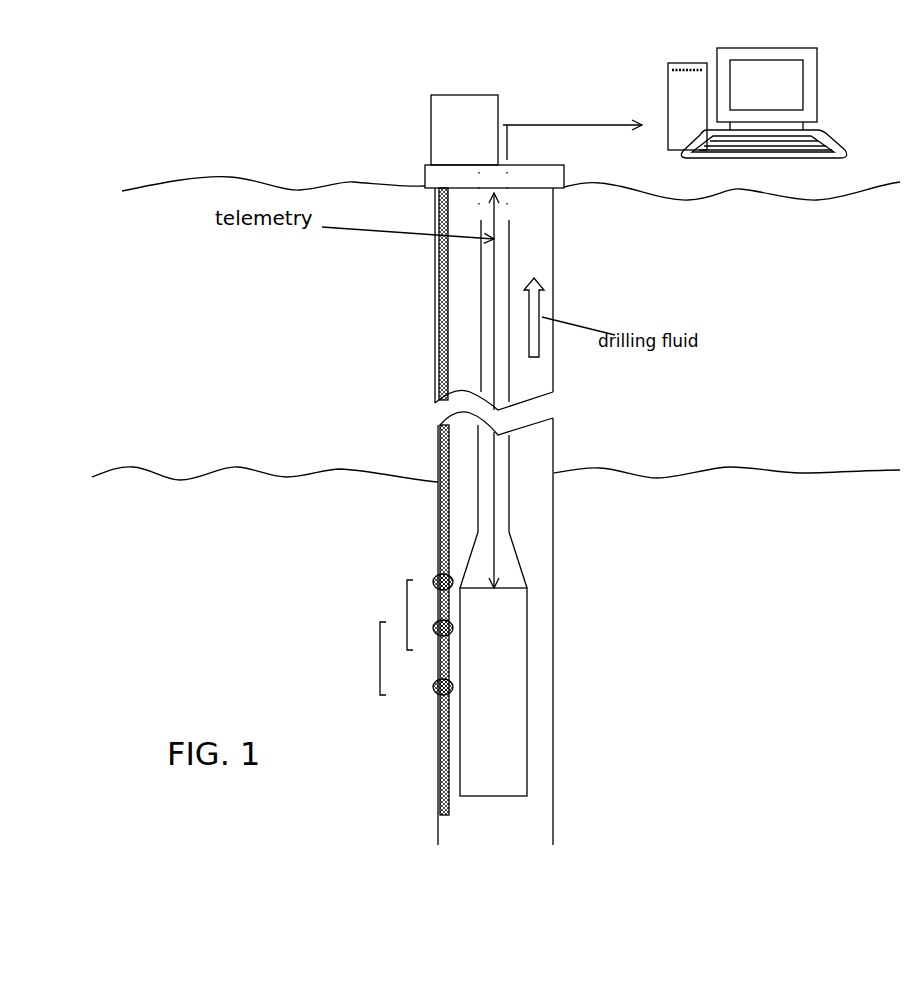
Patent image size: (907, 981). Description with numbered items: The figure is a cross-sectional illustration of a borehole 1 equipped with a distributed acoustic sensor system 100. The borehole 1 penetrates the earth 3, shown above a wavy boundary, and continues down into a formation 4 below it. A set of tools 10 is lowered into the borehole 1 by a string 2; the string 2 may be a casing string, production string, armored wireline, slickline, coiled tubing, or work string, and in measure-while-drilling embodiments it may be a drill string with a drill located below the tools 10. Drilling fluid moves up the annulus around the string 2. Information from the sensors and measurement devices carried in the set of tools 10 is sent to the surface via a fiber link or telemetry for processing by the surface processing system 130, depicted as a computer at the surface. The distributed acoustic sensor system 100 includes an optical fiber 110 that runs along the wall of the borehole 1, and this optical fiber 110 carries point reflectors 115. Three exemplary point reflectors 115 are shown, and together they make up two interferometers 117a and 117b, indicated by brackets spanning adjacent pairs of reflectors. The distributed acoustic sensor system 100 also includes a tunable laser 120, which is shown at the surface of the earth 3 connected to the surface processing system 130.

The distributed acoustic sensor system 100 is at (95, 207).
The tunable laser 120 is at (485, 144).
The surface processing system 130 is at (792, 92).
The borehole 1 is at (535, 228).
The string 2 is at (480, 297).
The earth 3 is at (852, 286).
The formation 4 is at (878, 563).
The optical fiber 110 is at (440, 455).
The set of tools 10 is at (522, 707).
The point reflectors 115 is at (432, 585).
The interferometer 117a is at (407, 615).
The interferometer 117b is at (380, 657).